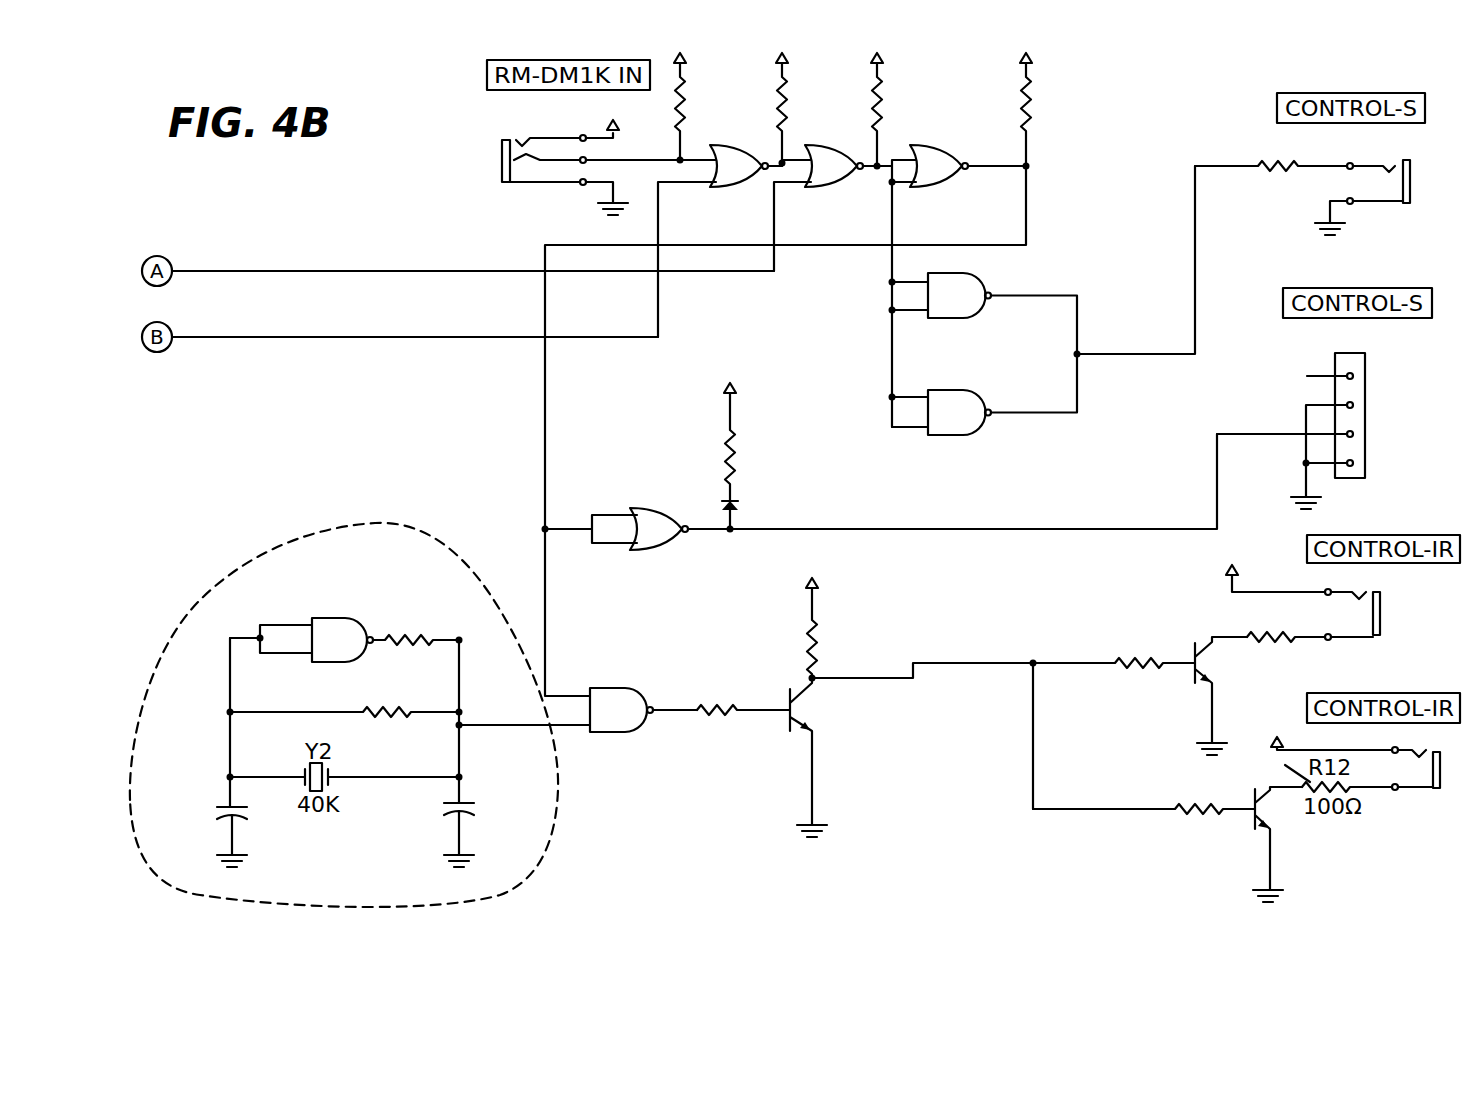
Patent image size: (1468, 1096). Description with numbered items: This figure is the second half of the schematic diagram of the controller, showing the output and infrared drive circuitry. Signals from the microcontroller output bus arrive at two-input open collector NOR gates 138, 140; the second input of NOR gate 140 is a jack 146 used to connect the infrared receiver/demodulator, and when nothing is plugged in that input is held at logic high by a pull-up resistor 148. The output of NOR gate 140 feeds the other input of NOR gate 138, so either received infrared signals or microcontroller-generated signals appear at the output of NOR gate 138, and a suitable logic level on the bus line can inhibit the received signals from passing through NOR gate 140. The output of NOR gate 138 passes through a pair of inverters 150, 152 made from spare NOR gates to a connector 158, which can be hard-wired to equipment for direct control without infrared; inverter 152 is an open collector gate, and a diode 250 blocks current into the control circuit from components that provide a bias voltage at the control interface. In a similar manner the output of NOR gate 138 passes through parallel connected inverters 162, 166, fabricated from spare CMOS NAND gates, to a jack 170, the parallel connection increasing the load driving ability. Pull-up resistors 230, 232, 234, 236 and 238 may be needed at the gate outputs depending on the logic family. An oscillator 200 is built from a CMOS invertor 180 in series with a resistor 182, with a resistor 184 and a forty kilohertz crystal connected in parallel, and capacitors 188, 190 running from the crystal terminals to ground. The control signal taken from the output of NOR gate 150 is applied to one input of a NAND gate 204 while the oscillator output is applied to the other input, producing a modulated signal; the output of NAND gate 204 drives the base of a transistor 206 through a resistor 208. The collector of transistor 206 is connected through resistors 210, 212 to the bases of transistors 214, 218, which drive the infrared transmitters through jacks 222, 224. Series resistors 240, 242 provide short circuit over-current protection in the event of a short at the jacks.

The jack 146 is at (502, 167).
The pull-up resistor 148 is at (673, 90).
The NOR gate 140 is at (737, 188).
The pull-up resistor 230 is at (777, 90).
The NOR gate 138 is at (832, 190).
The pull-up resistor 232 is at (873, 90).
The inverter 150 is at (937, 188).
The pull-up resistor 234 is at (1027, 127).
The inverter 162 is at (977, 273).
The inverter 166 is at (980, 390).
The series resistor 240 is at (1267, 162).
The jack 170 is at (1403, 203).
The connector 158 is at (1367, 408).
The inverter 152 is at (640, 507).
The pull-up resistor 236 is at (725, 433).
The diode 250 is at (730, 502).
The oscillator 200 is at (560, 793).
The CMOS invertor 180 is at (353, 618).
The resistor 182 is at (420, 645).
The resistor 184 is at (407, 723).
The capacitor 188 is at (235, 818).
The capacitor 190 is at (448, 822).
The NAND gate 204 is at (637, 687).
The resistor 208 is at (727, 697).
The transistor 206 is at (790, 727).
The pull-up resistor 238 is at (805, 623).
The resistor 210 is at (1130, 660).
The transistor 214 is at (1202, 678).
The series resistor 242 is at (1255, 630).
The jack 222 is at (1373, 637).
The resistor 212 is at (1187, 802).
The transistor 218 is at (1253, 825).
The jack 224 is at (1432, 790).